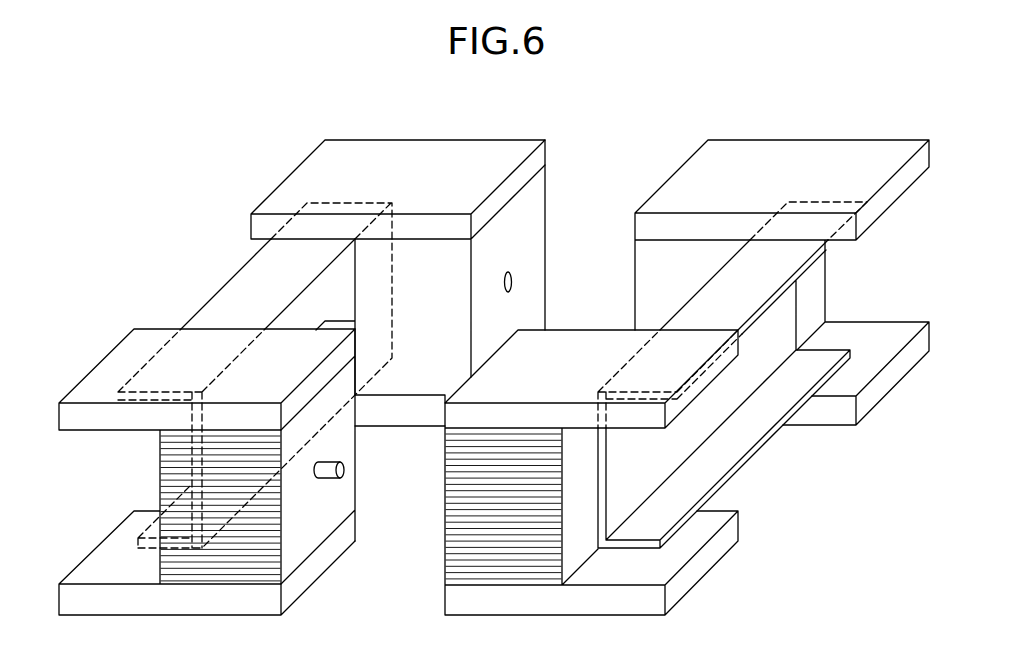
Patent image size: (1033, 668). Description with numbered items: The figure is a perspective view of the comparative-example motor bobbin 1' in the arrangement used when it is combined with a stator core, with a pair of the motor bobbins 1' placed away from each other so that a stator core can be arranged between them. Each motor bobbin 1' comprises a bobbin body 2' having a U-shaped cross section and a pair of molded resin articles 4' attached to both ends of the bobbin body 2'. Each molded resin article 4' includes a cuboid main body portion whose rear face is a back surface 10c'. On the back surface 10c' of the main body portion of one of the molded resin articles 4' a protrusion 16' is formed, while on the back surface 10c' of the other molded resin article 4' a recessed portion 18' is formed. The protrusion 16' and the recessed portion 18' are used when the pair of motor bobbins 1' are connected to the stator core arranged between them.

The motor bobbin 1' is at (494, 327).
The bobbin body 2' is at (510, 375).
The molded resin article 4' is at (494, 352).
The back surface of main body portion 10c' is at (461, 380).
The protrusion 16' is at (356, 501).
The recessed portion 18' is at (548, 261).